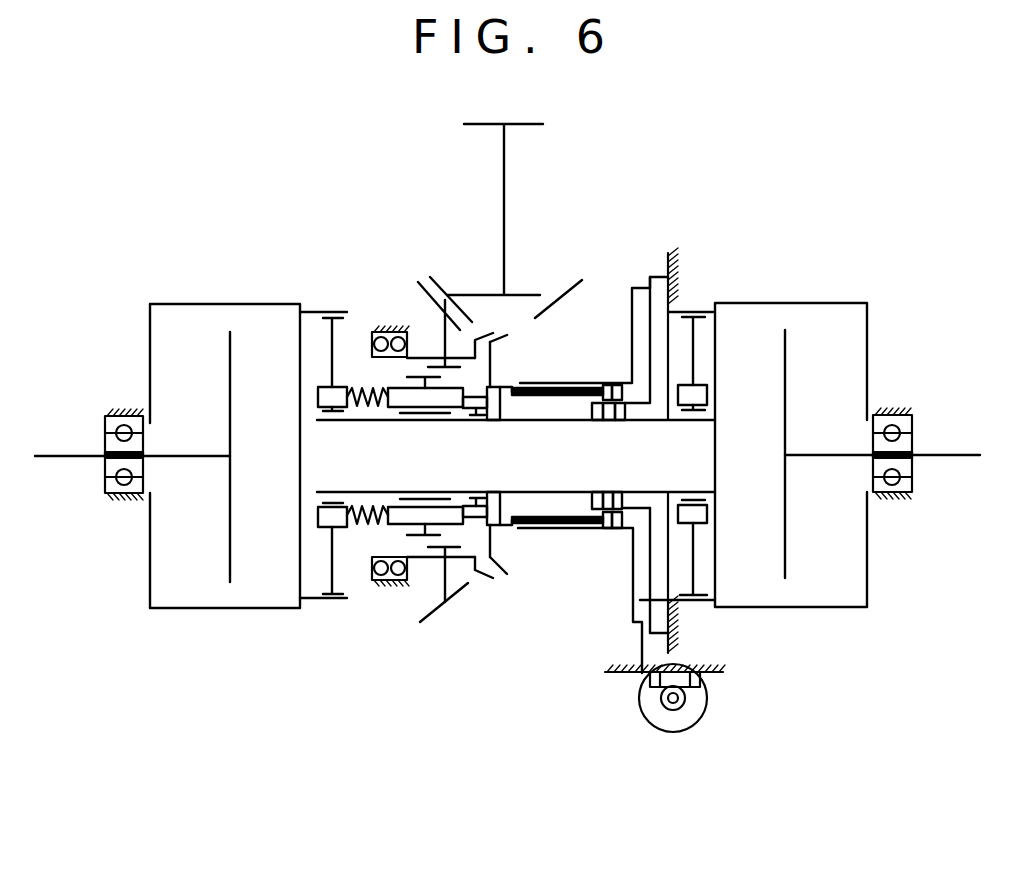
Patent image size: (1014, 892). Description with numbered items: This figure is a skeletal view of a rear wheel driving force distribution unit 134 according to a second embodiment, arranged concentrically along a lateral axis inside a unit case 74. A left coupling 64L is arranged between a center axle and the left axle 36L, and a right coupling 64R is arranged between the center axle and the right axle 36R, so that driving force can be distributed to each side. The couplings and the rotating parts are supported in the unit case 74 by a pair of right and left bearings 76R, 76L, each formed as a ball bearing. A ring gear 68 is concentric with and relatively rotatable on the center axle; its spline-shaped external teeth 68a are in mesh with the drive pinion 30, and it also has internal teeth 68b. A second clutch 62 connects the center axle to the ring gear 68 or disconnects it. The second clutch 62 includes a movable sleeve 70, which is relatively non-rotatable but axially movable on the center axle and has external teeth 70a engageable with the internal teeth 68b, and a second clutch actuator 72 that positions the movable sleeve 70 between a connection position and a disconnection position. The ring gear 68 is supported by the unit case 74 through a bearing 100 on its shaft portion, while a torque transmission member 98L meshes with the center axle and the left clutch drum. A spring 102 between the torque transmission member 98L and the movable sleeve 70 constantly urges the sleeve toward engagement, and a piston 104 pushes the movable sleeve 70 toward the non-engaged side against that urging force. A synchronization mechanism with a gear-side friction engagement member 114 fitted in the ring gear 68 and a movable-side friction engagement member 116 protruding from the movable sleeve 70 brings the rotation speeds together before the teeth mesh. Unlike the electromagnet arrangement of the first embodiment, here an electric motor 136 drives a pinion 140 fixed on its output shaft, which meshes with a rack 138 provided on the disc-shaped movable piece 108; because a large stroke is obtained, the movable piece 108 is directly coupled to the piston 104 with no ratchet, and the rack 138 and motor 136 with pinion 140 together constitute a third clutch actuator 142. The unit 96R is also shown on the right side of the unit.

The drive pinion 30 is at (505, 168).
The left axle 36L is at (45, 453).
The right axle 36R is at (965, 460).
The second clutch 62 is at (490, 763).
The left coupling 64L is at (210, 280).
The right coupling 64R is at (860, 293).
The ring gear 68 is at (440, 322).
The external teeth 68a is at (430, 625).
The internal teeth 68b is at (433, 567).
The movable sleeve 70 is at (455, 395).
The external teeth 70a is at (427, 537).
The second clutch actuator 72 is at (630, 783).
The unit case 74 is at (113, 410).
The left bearing 76L is at (123, 413).
The right bearing 76R is at (913, 432).
The right gear 96R is at (705, 340).
The torque transmission member 98L is at (327, 340).
The bearing 100 is at (375, 587).
The spring 102 is at (358, 523).
The piston 104 is at (538, 517).
The movable piece 108 is at (672, 603).
The gear-side friction engagement member 114 is at (483, 573).
The movable-side friction engagement member 116 is at (492, 560).
The rear wheel driving force distribution unit 134 is at (794, 160).
The electric motor 136 is at (678, 733).
The rack 138 is at (700, 673).
The pinion 140 is at (690, 700).
The third clutch actuator 142 is at (736, 732).